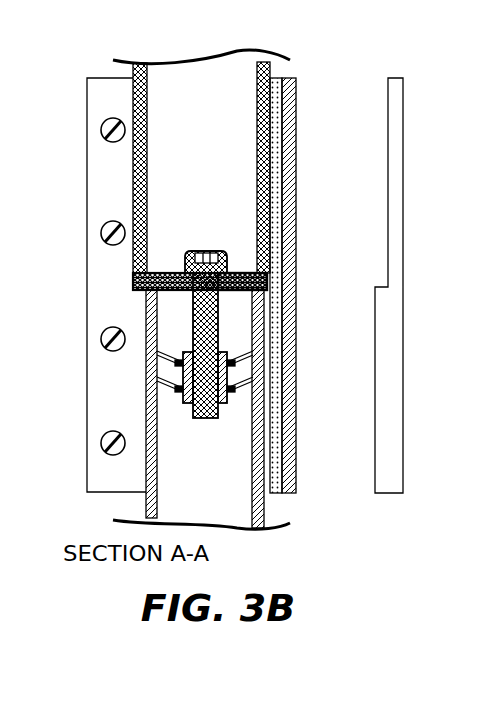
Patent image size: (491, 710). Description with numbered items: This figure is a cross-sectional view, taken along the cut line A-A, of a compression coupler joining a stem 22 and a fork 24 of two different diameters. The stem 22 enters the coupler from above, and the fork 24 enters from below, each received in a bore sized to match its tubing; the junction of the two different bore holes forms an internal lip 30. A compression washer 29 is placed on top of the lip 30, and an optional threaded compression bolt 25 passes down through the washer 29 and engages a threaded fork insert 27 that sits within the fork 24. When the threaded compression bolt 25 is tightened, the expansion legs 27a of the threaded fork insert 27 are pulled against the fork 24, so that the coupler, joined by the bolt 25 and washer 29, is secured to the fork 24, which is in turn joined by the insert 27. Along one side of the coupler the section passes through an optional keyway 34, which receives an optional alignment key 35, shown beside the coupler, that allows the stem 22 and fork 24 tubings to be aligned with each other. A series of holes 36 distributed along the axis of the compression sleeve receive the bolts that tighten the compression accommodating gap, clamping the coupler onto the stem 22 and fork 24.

The stem 22 is at (182, 75).
The fork 24 is at (240, 503).
The threaded compression bolt 25 is at (205, 251).
The threaded fork insert 27 is at (176, 344).
The expansion legs 27a is at (177, 390).
The compression washer 29 is at (237, 292).
The lip 30 is at (134, 292).
The keyway 34 is at (284, 110).
The alignment key 35 is at (403, 302).
The holes 36 is at (101, 130).